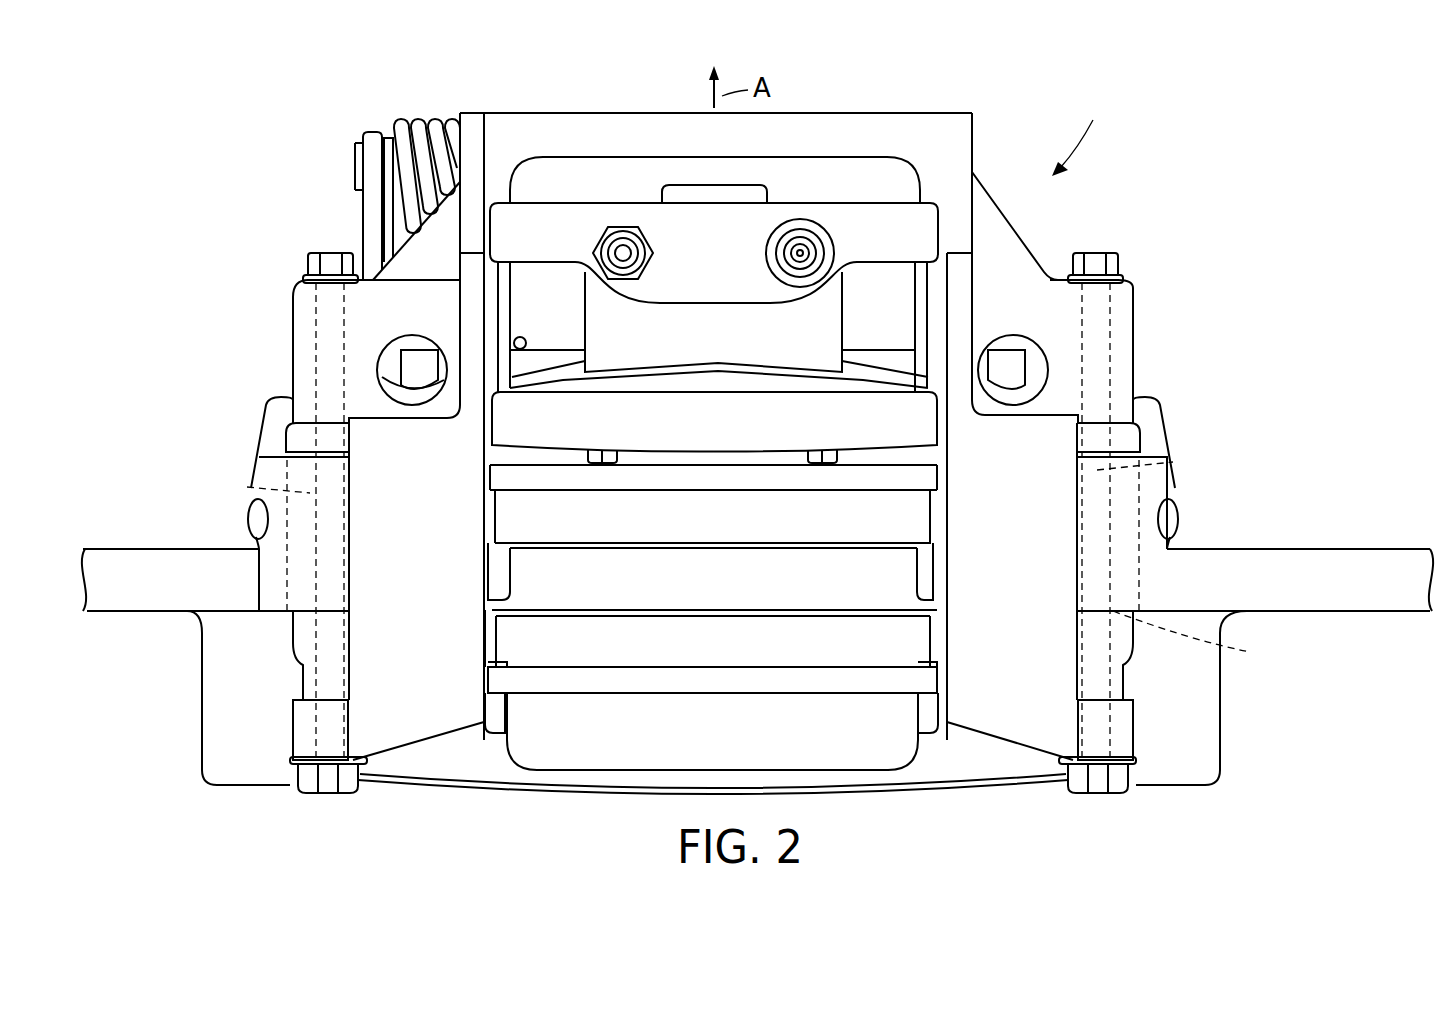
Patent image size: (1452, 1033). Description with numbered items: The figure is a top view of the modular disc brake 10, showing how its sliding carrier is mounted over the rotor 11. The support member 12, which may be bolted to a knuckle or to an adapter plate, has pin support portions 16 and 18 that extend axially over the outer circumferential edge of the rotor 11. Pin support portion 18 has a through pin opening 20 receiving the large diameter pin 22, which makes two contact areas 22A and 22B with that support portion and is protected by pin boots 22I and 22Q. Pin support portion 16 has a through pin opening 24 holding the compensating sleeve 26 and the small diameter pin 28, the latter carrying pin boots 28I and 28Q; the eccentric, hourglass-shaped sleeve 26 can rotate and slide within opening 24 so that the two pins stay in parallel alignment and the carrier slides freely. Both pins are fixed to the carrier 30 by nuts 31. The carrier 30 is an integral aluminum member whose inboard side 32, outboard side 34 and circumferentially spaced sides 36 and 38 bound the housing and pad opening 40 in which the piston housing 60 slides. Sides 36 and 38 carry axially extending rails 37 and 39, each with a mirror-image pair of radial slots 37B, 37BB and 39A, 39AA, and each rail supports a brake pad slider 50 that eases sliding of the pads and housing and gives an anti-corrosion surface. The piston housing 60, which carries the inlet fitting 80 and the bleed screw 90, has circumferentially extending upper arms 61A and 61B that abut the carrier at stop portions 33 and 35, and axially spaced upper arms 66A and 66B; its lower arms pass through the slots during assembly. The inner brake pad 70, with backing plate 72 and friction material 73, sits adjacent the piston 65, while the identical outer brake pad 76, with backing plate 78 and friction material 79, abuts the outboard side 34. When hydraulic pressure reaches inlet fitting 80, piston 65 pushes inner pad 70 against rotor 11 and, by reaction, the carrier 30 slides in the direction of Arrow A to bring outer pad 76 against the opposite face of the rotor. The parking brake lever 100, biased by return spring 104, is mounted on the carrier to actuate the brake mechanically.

The modular disc brake 10 is at (1085, 139).
The rotor 11 is at (701, 592).
The support member 12 is at (1158, 432).
The pin support portion 16 is at (260, 551).
The pin support portion 18 is at (1153, 547).
The through pin opening 20 is at (1117, 500).
The large diameter pin 22 is at (1123, 685).
The contact area 22A is at (1209, 637).
The contact area 22B is at (1173, 462).
The pin boot 22I is at (1128, 433).
The pin boot 22Q is at (1127, 695).
The through pin opening 24 is at (303, 515).
The compensating sleeve 26 is at (247, 487).
The small diameter pin 28 is at (327, 478).
The pin boot 28I is at (290, 438).
The pin boot 28Q is at (300, 647).
The carrier 30 is at (1023, 240).
The nuts 31 is at (1118, 260).
The inboard side 32 is at (900, 113).
The stop portion 33 is at (507, 200).
The outboard side 34 is at (838, 778).
The stop portion 35 is at (935, 202).
The circumferentially spaced apart side 36 is at (379, 589).
The rail member 37 is at (487, 568).
The radial slot 37B is at (487, 452).
The radial slot 37BB is at (487, 588).
The circumferentially spaced apart side 38 is at (1016, 559).
The rail member 39 is at (930, 573).
The radial slot 39A is at (942, 445).
The radial slot 39AA is at (934, 593).
The housing and pad opening 40 is at (927, 458).
The brake pad slider 50 is at (492, 551).
The piston housing 60 is at (696, 347).
The upper arm 61A is at (494, 251).
The upper arm 61B is at (894, 244).
The piston 65 is at (738, 458).
The upper arm 66A is at (499, 434).
The upper arm 66B is at (889, 434).
The inner brake pad 70 is at (502, 518).
The backing plate 72 is at (497, 483).
The friction material 73 is at (814, 529).
The outer brake pad 76 is at (922, 643).
The backing plate 78 is at (925, 684).
The friction material 79 is at (814, 652).
The inlet fitting 80 is at (777, 258).
The bleed screw 90 is at (644, 246).
The parking brake lever 100 is at (372, 207).
The return spring 104 is at (408, 125).